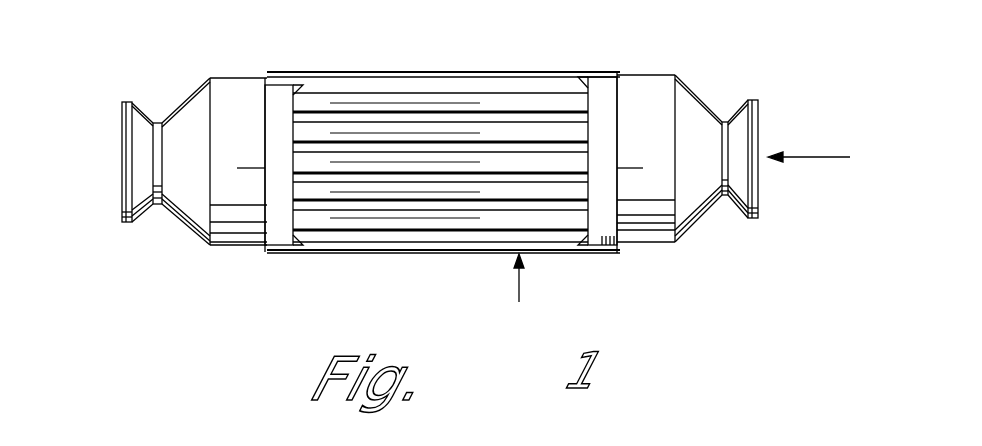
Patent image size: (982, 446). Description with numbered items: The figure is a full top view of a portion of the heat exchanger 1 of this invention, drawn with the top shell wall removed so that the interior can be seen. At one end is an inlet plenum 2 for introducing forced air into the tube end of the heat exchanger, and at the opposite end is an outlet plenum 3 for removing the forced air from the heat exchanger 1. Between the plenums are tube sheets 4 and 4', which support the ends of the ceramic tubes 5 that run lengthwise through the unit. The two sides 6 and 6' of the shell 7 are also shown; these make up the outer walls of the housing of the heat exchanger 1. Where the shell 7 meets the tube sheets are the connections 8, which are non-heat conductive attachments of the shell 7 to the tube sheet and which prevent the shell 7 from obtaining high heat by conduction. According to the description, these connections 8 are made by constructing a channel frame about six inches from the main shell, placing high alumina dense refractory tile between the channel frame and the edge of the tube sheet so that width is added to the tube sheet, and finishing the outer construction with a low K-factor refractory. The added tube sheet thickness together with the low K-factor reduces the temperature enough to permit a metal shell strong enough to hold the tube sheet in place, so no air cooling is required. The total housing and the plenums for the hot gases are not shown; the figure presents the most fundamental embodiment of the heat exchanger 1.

The heat exchanger 1 is at (454, 174).
The inlet plenum 2 is at (767, 125).
The outlet plenum 3 is at (123, 152).
The tube sheet 4 is at (632, 136).
The tube sheet 4' is at (261, 139).
The ceramic tubes 5 is at (391, 105).
The side of the shell 6 is at (443, 42).
The side of the shell 6' is at (443, 273).
The shell 7 is at (283, 255).
The connections 8 is at (577, 72).